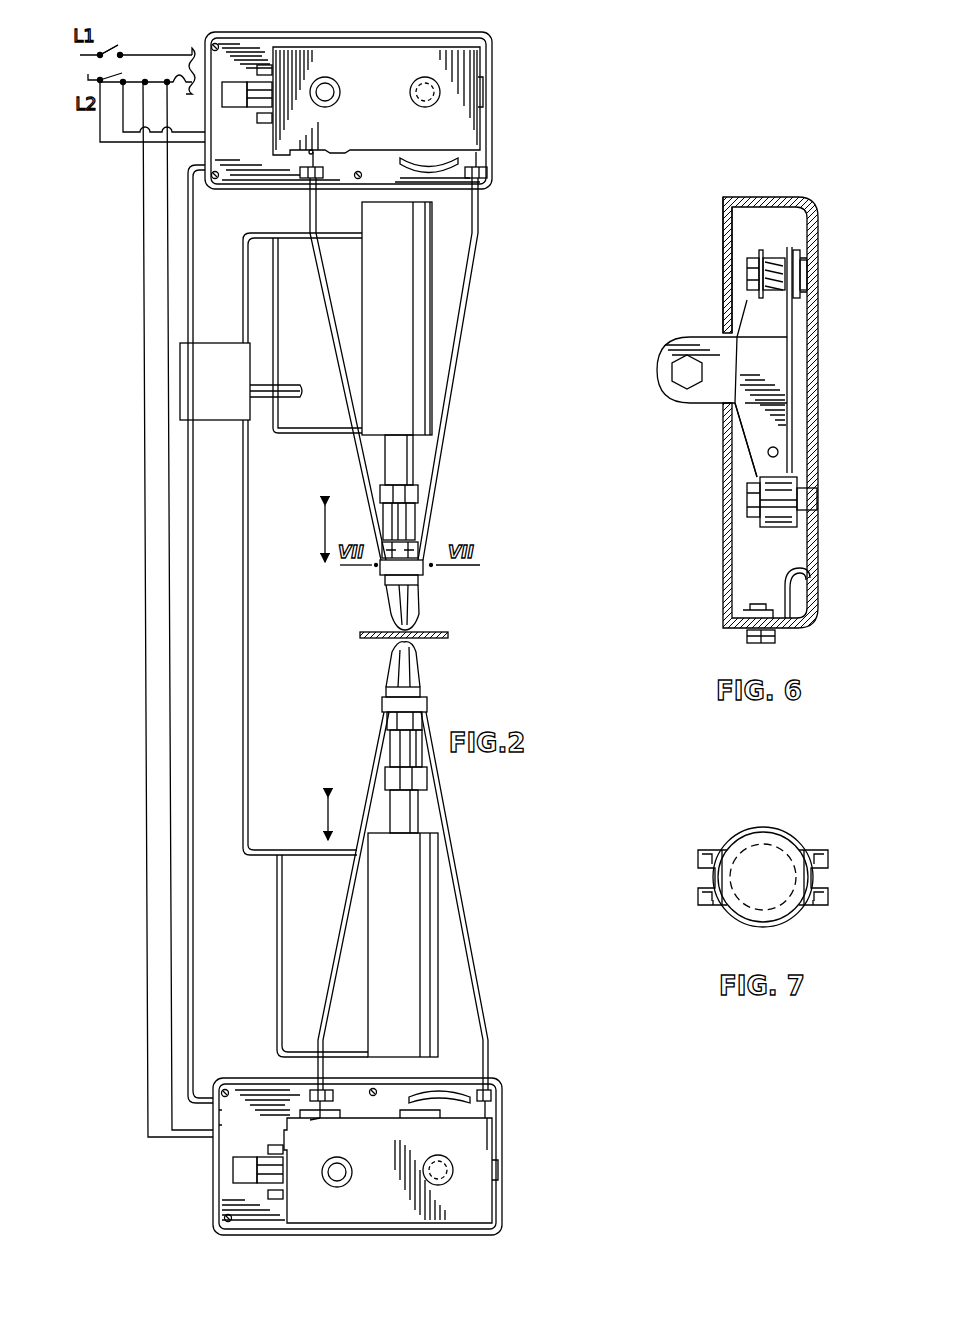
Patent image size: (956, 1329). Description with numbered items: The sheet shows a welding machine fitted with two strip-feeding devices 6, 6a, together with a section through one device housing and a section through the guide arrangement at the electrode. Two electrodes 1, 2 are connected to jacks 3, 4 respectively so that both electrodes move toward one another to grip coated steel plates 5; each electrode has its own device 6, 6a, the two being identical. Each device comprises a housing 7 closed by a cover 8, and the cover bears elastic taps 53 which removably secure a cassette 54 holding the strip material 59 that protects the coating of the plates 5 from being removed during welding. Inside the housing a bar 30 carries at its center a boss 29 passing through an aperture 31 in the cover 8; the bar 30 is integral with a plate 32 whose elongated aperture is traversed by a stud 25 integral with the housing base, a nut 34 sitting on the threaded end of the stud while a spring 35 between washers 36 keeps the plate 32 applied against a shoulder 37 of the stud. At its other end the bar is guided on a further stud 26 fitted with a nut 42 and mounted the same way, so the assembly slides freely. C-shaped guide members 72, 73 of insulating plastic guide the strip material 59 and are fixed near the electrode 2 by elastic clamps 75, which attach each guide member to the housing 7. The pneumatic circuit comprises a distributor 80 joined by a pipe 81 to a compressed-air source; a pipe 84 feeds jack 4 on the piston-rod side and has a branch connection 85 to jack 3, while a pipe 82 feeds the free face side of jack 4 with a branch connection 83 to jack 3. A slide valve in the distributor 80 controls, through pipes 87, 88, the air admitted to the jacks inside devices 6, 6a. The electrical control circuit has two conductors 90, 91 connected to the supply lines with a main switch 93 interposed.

In FIG. 2, the electrode 1 is at (399, 657).
In FIG. 2, the electrode 2 is at (403, 608).
In FIG. 2, the jack 3 is at (398, 959).
In FIG. 2, the jack 4 is at (393, 323).
In FIG. 2, the coated steel plates 5 is at (448, 633).
In FIG. 2, the device 6 is at (496, 162).
In FIG. 2, the device 6a is at (504, 1124).
In FIG. 2, the housing 7 is at (210, 1166).
In FIG. 6, the housing 7 is at (815, 380).
In FIG. 6, the cover 8 is at (723, 300).
In FIG. 6, the stud 25 is at (808, 280).
In FIG. 6, the stud 26 is at (817, 500).
In FIG. 6, the boss 29 is at (670, 385).
In FIG. 6, the bar 30 is at (777, 381).
In FIG. 2, the aperture 31 is at (235, 110).
In FIG. 6, the aperture 31 is at (730, 410).
In FIG. 6, the plate 32 is at (798, 262).
In FIG. 6, the nut 34 is at (750, 276).
In FIG. 6, the spring 35 is at (773, 258).
In FIG. 6, the washers 36 is at (759, 265).
In FIG. 6, the shoulder 37 is at (805, 292).
In FIG. 6, the nut 42 is at (750, 505).
In FIG. 2, the elastic taps 53 is at (528, 80).
In FIG. 2, the cassette 54 is at (376, 74).
In FIG. 2, the strip material 59 is at (385, 582).
In FIG. 7, the strip material 59 is at (716, 878).
In FIG. 7, the C-shaped guide member 72 is at (712, 905).
In FIG. 7, the C-shaped guide member 73 is at (814, 905).
In FIG. 7, the elastic clamps 75 is at (712, 850).
In FIG. 2, the distributor 80 is at (196, 389).
In FIG. 2, the pipe 81 is at (290, 388).
In FIG. 2, the pipe 82 is at (293, 232).
In FIG. 2, the branch connection 83 is at (282, 890).
In FIG. 2, the pipe 84 is at (289, 436).
In FIG. 2, the branch connection 85 is at (288, 852).
In FIG. 2, the pipe 87 is at (186, 168).
In FIG. 2, the pipe 88 is at (194, 650).
In FIG. 2, the conductor 90 is at (184, 55).
In FIG. 2, the conductor 91 is at (172, 72).
In FIG. 2, the main switch 93 is at (114, 46).